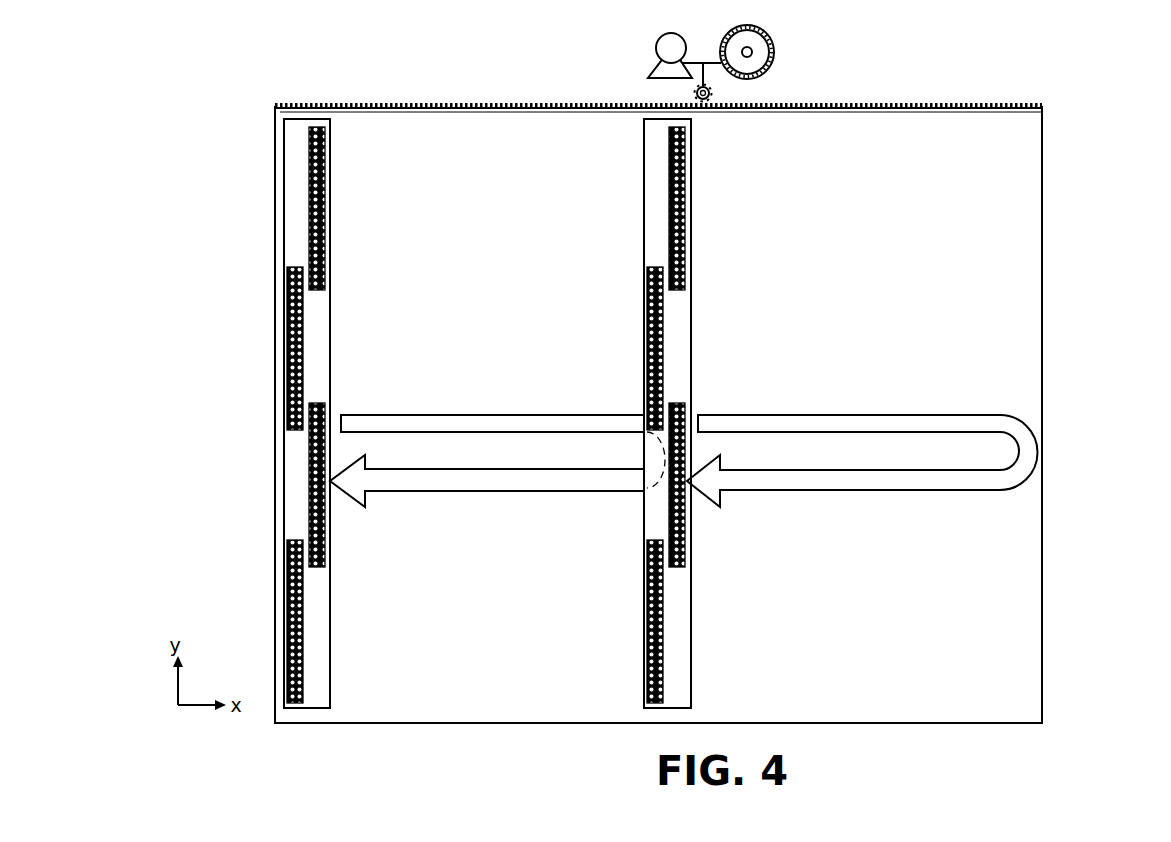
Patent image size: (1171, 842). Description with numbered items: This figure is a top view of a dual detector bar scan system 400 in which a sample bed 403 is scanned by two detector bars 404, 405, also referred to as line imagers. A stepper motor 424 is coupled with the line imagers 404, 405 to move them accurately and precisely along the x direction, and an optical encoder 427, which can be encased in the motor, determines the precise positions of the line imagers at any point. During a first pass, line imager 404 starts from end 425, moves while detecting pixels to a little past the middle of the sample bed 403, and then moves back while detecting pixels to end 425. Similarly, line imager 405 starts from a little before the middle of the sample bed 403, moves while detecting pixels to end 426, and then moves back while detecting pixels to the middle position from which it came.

The dual detector bar scan system 400 is at (348, 52).
The sample bed 403 is at (973, 152).
The detector bar 404 is at (330, 145).
The detector bar 405 is at (691, 145).
The stepper motor 424 is at (656, 47).
The end 425 is at (274, 423).
The end 426 is at (1043, 404).
The optical encoder 427 is at (774, 44).